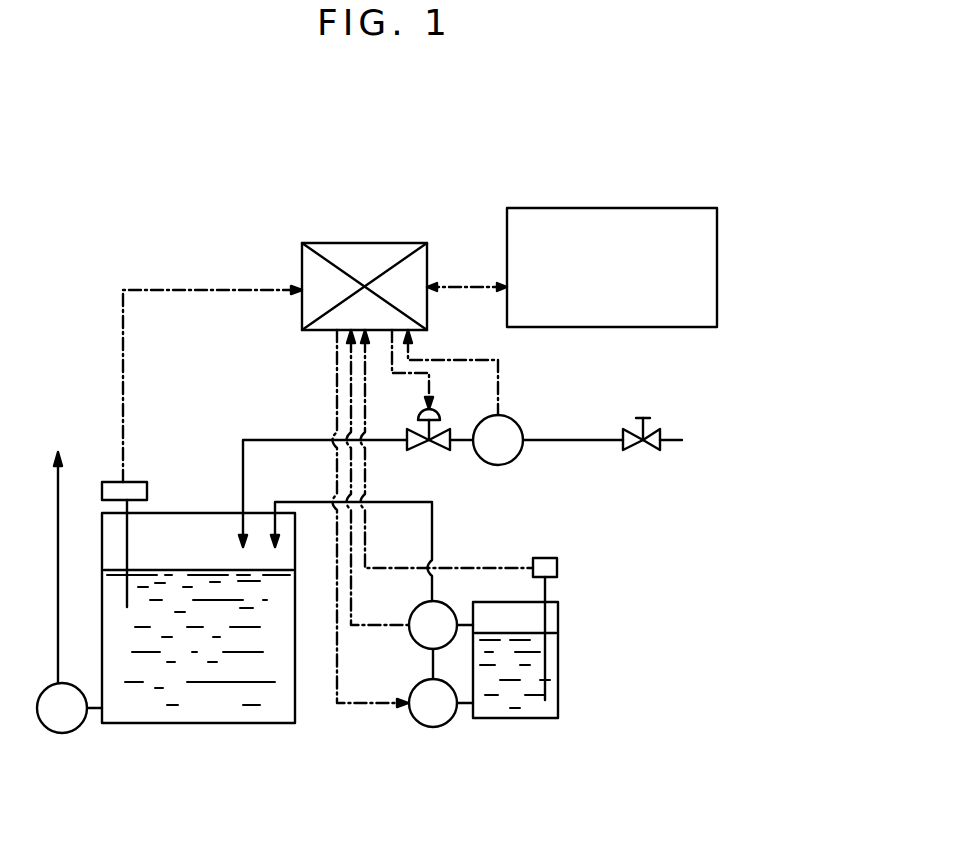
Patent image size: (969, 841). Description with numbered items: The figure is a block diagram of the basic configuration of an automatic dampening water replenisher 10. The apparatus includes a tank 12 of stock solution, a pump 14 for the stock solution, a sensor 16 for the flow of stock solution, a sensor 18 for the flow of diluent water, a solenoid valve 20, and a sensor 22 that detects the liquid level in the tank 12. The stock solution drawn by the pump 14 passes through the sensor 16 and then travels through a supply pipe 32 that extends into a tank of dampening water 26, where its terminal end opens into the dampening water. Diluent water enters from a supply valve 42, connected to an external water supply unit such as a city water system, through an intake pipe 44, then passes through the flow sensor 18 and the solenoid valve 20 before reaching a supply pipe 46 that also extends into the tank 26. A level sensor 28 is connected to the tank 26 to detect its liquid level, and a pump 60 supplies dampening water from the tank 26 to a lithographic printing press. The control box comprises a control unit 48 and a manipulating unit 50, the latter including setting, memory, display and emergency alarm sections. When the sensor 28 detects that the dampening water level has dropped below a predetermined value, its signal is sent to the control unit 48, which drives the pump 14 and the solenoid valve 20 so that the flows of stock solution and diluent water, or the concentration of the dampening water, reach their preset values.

The automatic dampening water replenisher 10 is at (639, 82).
The tank of stock solution 12 is at (558, 690).
The pump for stock solution 14 is at (433, 727).
The sensor for the flow of stock solution 16 is at (416, 641).
The sensor for the flow of diluent water 18 is at (513, 421).
The solenoid valve 20 is at (438, 449).
The sensor for detecting the liquid level in the tank 22 is at (557, 568).
The tank of dampening water 26 is at (185, 723).
The sensor for detecting liquid level 28 is at (135, 482).
The supply pipe 32 is at (316, 504).
The supply valve 42 is at (645, 417).
The intake pipe 44 is at (575, 441).
The supply pipe 46 is at (282, 440).
The control unit 48 is at (372, 243).
The manipulating unit 50 is at (625, 208).
The pump 60 is at (62, 733).